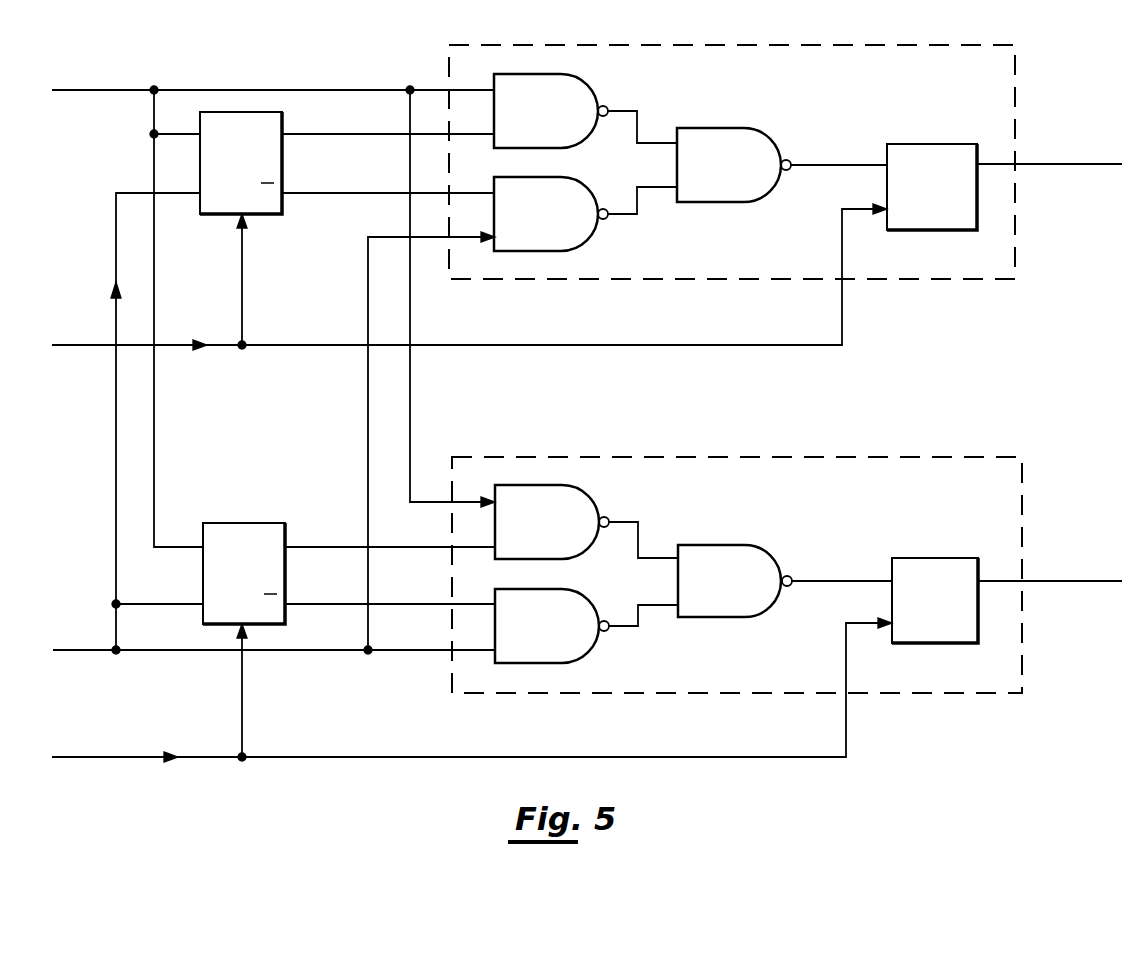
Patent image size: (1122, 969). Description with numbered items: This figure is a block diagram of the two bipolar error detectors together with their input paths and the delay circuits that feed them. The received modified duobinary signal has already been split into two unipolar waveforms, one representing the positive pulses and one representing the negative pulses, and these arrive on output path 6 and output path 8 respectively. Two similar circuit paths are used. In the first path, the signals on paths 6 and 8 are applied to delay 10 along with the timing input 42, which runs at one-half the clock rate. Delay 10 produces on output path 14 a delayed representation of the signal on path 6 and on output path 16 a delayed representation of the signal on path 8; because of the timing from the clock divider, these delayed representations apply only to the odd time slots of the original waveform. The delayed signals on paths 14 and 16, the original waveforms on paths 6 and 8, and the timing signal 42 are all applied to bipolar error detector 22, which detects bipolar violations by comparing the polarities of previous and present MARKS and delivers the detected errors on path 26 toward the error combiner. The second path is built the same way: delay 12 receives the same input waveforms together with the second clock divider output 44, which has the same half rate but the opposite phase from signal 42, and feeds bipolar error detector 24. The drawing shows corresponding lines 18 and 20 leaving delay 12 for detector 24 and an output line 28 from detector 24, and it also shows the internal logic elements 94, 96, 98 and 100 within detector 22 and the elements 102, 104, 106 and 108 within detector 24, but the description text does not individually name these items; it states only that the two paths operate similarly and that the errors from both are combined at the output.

The output path 6 is at (72, 90).
The output path 8 is at (77, 650).
The delay 10 is at (292, 113).
The delay 12 is at (285, 533).
The output path 14 is at (350, 134).
The output path 16 is at (347, 180).
The Q output line of flip-flop 12 18 is at (382, 547).
The Q-bar output line of flip-flop 12 20 is at (392, 605).
The bipolar error detector 22 is at (921, 78).
The bipolar error detector 24 is at (935, 501).
The path 26 is at (1041, 163).
The output line 28 is at (1067, 580).
The clock divider output 42 is at (60, 345).
The clock divider output 44 is at (93, 757).
The NAND gate 94 is at (585, 134).
The NAND gate 96 is at (587, 188).
The NAND gate 98 is at (772, 187).
The D flip-flop 100 is at (924, 144).
The NAND gate 102 is at (588, 498).
The NAND gate 104 is at (591, 649).
The NAND gate 106 is at (767, 552).
The D flip-flop 108 is at (934, 558).